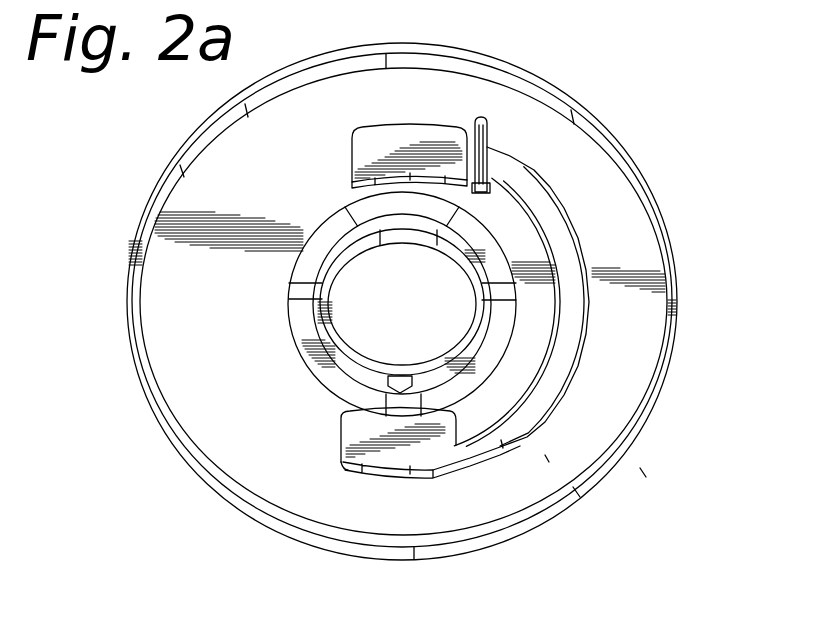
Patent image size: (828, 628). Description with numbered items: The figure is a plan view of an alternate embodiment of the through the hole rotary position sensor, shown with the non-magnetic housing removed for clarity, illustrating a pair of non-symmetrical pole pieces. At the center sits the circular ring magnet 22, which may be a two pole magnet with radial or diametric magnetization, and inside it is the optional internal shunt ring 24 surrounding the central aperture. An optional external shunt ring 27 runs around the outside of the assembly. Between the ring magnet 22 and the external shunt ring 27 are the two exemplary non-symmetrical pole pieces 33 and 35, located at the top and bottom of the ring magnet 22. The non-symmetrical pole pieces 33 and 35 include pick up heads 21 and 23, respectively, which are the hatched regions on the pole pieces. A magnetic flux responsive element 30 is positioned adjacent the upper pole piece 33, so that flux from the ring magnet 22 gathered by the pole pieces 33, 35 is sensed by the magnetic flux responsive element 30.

The pick up head 21 is at (418, 156).
The ring magnet 22 is at (322, 214).
The pick up head 23 is at (432, 440).
The internal shunt ring 24 is at (340, 336).
The external shunt ring 27 is at (671, 291).
The magnetic flux responsive element 30 is at (488, 122).
The non-symmetrical pole piece 33 is at (393, 126).
The non-symmetrical pole piece 35 is at (340, 440).